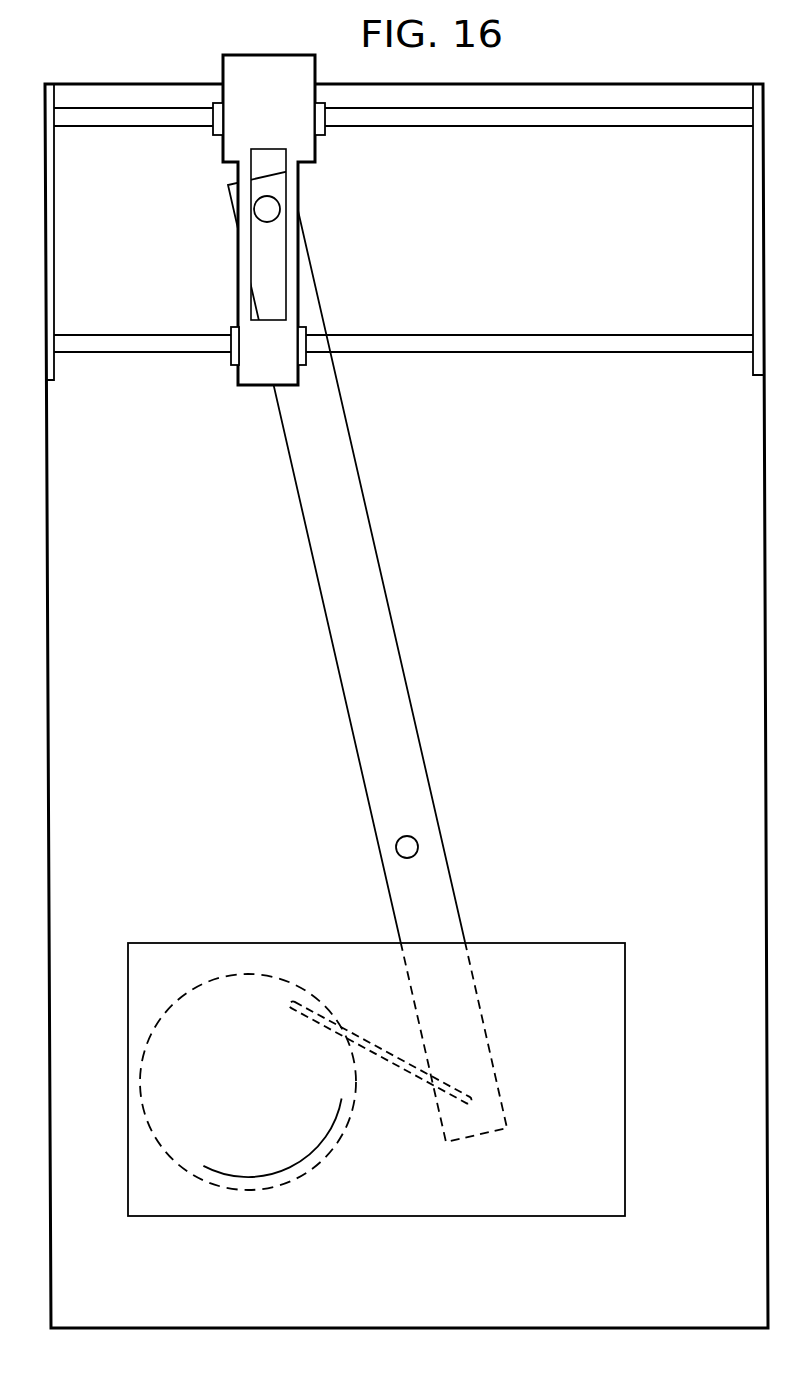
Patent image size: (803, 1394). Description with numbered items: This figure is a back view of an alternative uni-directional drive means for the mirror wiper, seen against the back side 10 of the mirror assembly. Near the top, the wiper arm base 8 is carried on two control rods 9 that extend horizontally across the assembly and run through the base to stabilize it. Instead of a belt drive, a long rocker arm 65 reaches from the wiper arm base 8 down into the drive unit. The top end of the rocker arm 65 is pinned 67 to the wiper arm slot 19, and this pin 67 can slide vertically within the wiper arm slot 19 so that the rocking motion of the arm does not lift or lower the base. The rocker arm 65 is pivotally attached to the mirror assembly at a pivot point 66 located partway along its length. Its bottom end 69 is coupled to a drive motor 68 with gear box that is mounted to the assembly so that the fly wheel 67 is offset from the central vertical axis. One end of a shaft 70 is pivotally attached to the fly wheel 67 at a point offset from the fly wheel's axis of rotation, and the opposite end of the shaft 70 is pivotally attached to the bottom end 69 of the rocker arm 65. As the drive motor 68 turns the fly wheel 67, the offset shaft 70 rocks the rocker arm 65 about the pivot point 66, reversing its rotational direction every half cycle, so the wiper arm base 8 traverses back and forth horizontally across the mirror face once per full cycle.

The wiper arm base 8 is at (298, 56).
The control rods 9 is at (490, 108).
The back side 10 is at (212, 748).
The wiper arm slot 19 is at (252, 290).
The rocker arm 65 is at (358, 473).
The pivot point 66 is at (513, 808).
The pin / fly wheel 67 is at (280, 204).
The drive motor 68 is at (408, 1037).
The bottom end of the rocker arm 69 is at (498, 1090).
The shaft 70 is at (388, 1067).